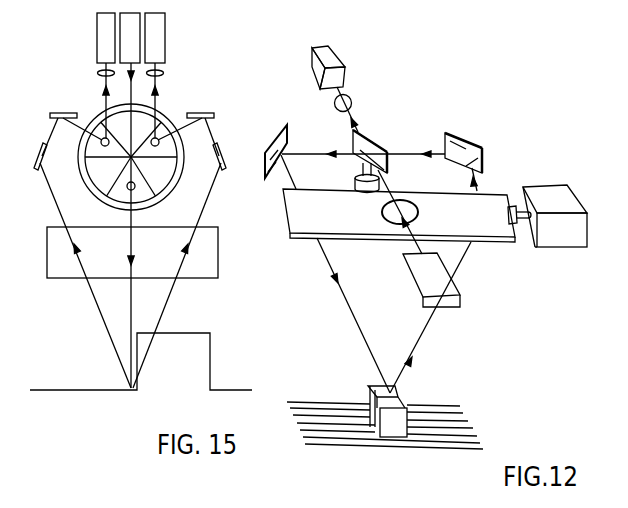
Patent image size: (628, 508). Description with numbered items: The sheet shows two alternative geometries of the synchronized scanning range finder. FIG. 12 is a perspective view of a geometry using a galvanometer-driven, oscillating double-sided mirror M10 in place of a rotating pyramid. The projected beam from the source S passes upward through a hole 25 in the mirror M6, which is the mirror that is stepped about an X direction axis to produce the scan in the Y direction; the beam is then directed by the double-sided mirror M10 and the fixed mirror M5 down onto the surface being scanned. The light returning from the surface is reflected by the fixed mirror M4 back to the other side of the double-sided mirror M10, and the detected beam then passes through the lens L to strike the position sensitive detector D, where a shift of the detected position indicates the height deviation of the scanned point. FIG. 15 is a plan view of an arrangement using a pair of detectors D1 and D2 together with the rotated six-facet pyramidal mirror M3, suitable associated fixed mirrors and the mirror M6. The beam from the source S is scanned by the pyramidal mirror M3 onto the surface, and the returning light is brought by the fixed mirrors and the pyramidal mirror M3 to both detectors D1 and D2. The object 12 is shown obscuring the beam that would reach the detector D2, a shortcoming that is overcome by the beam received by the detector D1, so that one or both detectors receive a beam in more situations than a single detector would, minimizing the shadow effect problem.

In FIG. 15, the detector D1 is at (106, 38).
In FIG. 15, the source S is at (130, 38).
In FIG. 12, the source S is at (431, 280).
In FIG. 15, the detector D2 is at (155, 38).
In FIG. 15, the pyramidal mirror M3 is at (162, 181).
In FIG. 15, the mirror M6 is at (68, 267).
In FIG. 12, the mirror M6 is at (493, 230).
In FIG. 15, the object 12 is at (193, 333).
In FIG. 12, the position sensitive detector D is at (328, 67).
In FIG. 12, the lens L is at (353, 102).
In FIG. 12, the fixed mirror M5 is at (280, 140).
In FIG. 12, the double-sided mirror M10 is at (378, 140).
In FIG. 12, the fixed mirror M4 is at (473, 140).
In FIG. 12, the hole 25 is at (405, 201).